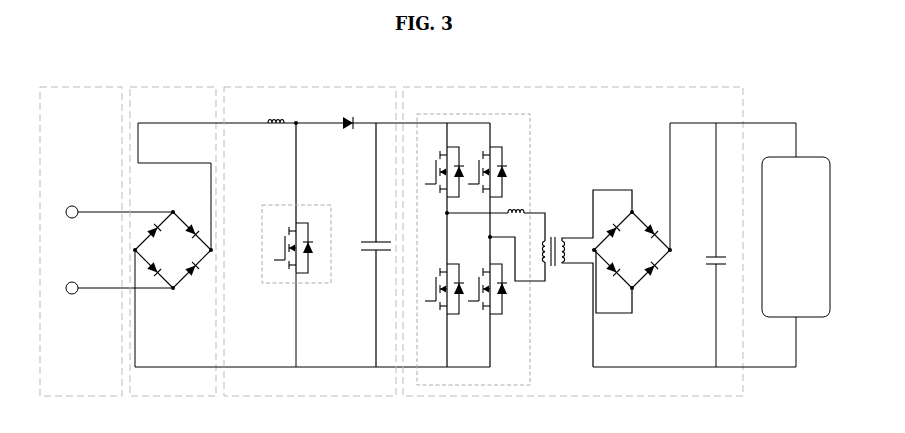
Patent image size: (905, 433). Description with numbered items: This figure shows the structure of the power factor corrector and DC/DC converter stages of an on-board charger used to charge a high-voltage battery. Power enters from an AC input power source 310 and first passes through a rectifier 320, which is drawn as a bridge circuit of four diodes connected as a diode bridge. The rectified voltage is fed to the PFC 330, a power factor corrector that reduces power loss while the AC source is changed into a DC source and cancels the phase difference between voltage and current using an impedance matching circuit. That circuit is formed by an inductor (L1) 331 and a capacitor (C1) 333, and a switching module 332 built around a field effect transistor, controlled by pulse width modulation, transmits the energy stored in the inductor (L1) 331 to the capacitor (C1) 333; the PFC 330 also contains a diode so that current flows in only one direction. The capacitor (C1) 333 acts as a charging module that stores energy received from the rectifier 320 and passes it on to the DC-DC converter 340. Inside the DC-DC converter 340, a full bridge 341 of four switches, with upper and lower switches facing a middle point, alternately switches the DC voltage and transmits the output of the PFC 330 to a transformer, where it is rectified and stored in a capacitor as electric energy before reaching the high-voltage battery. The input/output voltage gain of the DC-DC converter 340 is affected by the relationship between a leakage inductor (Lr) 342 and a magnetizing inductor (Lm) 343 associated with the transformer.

The AC input power source 310 is at (68, 85).
The rectifier 320 is at (156, 85).
The PFC 330 is at (357, 233).
The inductor (L1) 331 is at (280, 128).
The switching module 332 is at (277, 284).
The capacitor (C1) 333 is at (367, 252).
The DC-DC converter 340 is at (616, 233).
The full bridge 341 is at (533, 170).
The leakage inductor (Lr) 342 is at (528, 207).
The magnetizing inductor (Lm) 343 is at (545, 267).